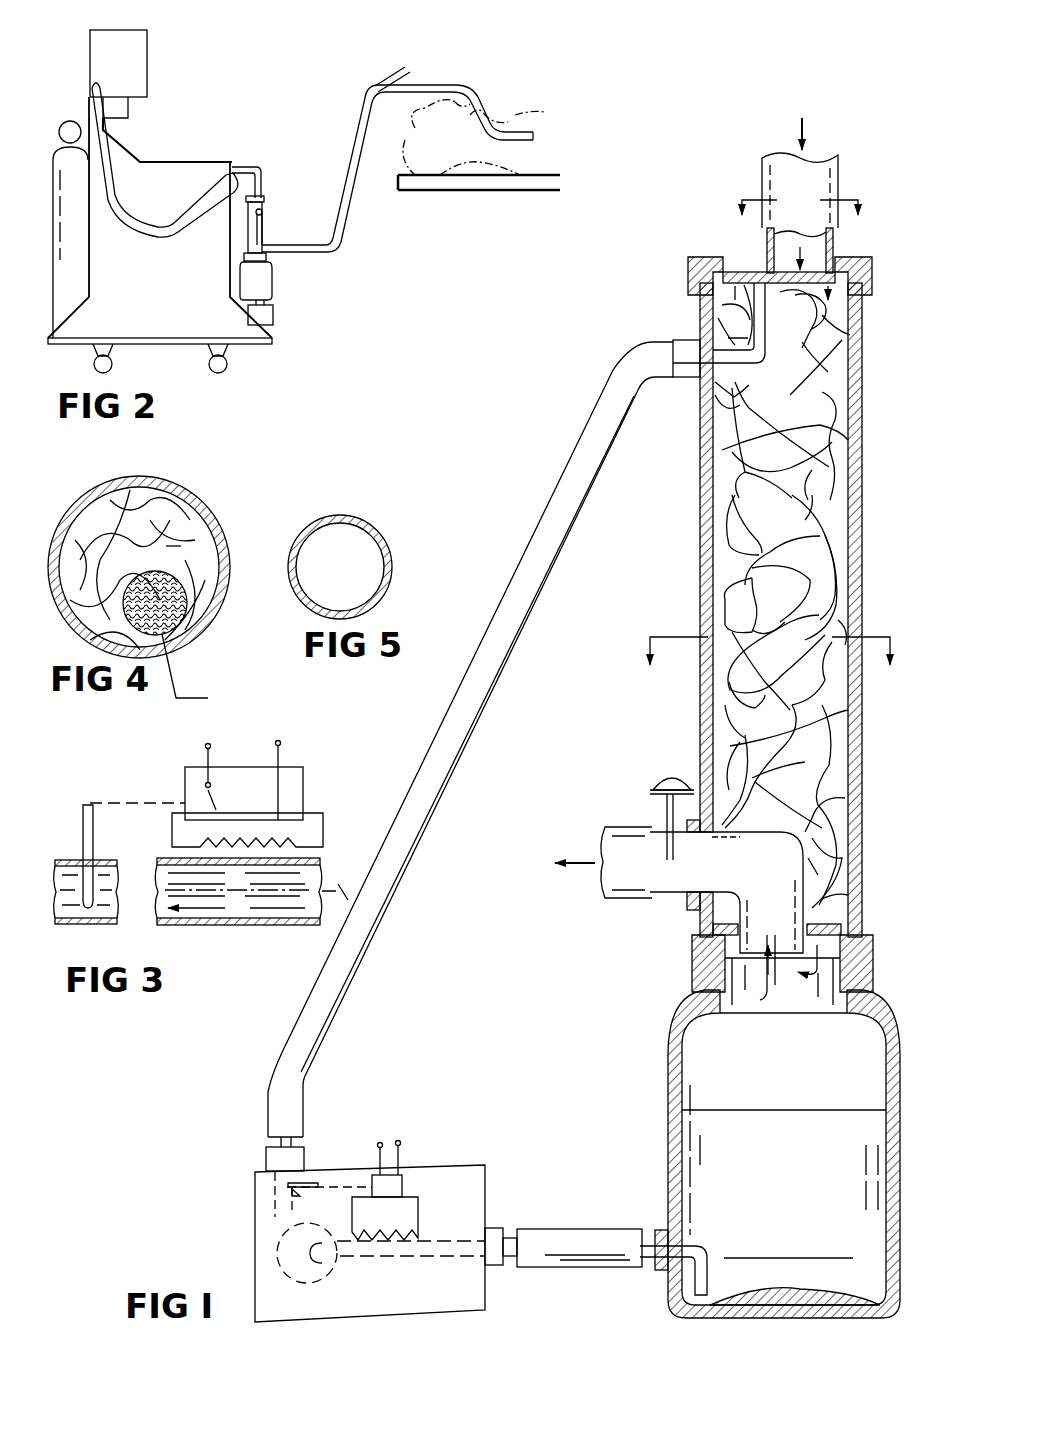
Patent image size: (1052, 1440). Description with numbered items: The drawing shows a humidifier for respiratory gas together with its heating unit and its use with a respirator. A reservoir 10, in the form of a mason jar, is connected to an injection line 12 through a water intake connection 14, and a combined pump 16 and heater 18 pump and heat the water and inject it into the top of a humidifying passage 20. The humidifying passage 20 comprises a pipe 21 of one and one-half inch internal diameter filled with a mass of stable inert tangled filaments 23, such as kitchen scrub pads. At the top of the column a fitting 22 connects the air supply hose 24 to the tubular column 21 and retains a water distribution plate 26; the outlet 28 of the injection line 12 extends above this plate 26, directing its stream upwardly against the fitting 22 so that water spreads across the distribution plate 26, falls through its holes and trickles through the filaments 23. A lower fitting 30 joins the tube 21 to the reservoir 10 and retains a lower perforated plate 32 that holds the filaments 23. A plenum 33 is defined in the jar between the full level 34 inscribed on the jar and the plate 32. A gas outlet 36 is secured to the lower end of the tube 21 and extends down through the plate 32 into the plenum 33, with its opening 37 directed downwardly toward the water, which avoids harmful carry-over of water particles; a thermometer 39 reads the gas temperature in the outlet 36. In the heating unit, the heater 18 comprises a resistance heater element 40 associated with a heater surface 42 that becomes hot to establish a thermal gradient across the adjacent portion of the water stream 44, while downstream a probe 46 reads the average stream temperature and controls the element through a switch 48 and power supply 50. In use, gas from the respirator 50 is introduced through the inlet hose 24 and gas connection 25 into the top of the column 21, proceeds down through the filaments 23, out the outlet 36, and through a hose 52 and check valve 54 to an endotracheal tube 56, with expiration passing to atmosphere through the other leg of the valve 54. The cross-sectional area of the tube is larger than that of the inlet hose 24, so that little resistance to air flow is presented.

In FIG. 1, the reservoir 10 is at (668, 1112).
In FIG. 2, the reservoir 10 is at (274, 281).
In FIG. 1, the injection line 12 is at (452, 1094).
In FIG. 1, the water intake connection 14 is at (704, 1249).
In FIG. 1, the pump 16 is at (290, 1250).
In FIG. 2, the pump 16 is at (275, 313).
In FIG. 1, the heater 18 is at (442, 1206).
In FIG. 2, the heater 18 is at (295, 310).
In FIG. 3, the heater 18 is at (340, 858).
In FIG. 1, the humidifying passage 20 is at (658, 540).
In FIG. 2, the humidifying passage 20 is at (278, 206).
In FIG. 1, the pipe 21 is at (700, 476).
In FIG. 4, the pipe 21 is at (211, 514).
In FIG. 1, the fitting 22 is at (722, 258).
In FIG. 1, the filaments 23 is at (787, 533).
In FIG. 4, the filaments 23 is at (176, 634).
In FIG. 1, the air supply hose 24 is at (762, 192).
In FIG. 2, the air supply hose 24 is at (262, 172).
In FIG. 1, the gas connection 25 is at (838, 250).
In FIG. 5, the gas connection 25 is at (380, 552).
In FIG. 1, the water distribution plate 26 is at (862, 326).
In FIG. 1, the outlet 28 is at (758, 270).
In FIG. 1, the lower fitting 30 is at (692, 968).
In FIG. 1, the lower perforated plate 32 is at (808, 918).
In FIG. 1, the plenum 33 is at (804, 1062).
In FIG. 1, the full level 34 is at (857, 1108).
In FIG. 1, the gas outlet 36 is at (640, 906).
In FIG. 1, the opening 37 is at (788, 973).
In FIG. 1, the thermometer 39 is at (658, 791).
In FIG. 1, the resistance heater element 40 is at (416, 1233).
In FIG. 3, the resistance heater element 40 is at (270, 840).
In FIG. 3, the heater surface 42 is at (322, 867).
In FIG. 3, the water stream 44 is at (141, 870).
In FIG. 1, the probe 46 is at (312, 1182).
In FIG. 3, the probe 46 is at (93, 848).
In FIG. 3, the switch 48 is at (216, 796).
In FIG. 1, the power supply 50 is at (403, 1143).
In FIG. 2, the power supply 50 is at (162, 287).
In FIG. 3, the power supply 50 is at (280, 742).
In FIG. 2, the hose 52 is at (352, 213).
In FIG. 2, the valve 54 is at (380, 90).
In FIG. 2, the endotracheal tube 56 is at (495, 125).